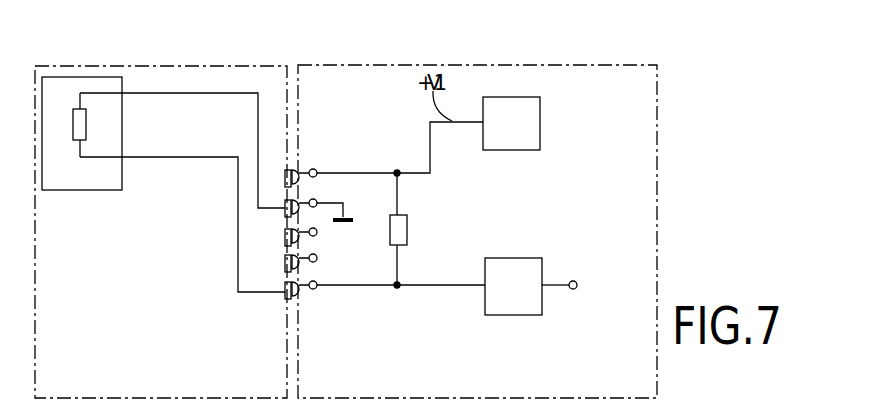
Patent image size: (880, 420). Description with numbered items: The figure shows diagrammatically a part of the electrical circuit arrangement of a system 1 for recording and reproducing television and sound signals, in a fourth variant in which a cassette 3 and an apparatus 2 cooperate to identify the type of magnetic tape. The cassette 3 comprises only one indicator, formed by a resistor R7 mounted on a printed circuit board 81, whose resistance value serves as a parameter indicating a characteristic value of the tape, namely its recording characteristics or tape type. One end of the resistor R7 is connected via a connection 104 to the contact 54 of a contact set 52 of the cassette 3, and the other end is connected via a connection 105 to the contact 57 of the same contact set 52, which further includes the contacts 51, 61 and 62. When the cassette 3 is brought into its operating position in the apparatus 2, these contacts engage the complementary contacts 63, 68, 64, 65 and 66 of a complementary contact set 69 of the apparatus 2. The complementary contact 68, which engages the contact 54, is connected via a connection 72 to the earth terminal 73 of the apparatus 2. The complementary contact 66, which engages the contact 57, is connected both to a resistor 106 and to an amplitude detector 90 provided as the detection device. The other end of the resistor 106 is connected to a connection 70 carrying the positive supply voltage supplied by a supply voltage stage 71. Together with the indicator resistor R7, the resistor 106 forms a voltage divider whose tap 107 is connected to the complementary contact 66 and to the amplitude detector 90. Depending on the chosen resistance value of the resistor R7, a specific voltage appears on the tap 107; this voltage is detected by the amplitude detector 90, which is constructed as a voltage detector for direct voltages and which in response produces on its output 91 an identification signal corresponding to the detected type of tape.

The system 1 is at (291, 55).
The apparatus 2 is at (577, 55).
The cassette 3 is at (154, 56).
The printed circuit board 81 is at (65, 188).
The resistor R7 is at (83, 122).
The connection 104 is at (177, 97).
The connection 105 is at (193, 160).
The contact 51 is at (284, 174).
The contact 54 is at (283, 212).
The contact 61 is at (283, 233).
The contact 62 is at (284, 266).
The contact 57 is at (283, 300).
The contact set 52 is at (277, 316).
The complementary contact set 69 is at (310, 317).
The complementary contact 63 is at (304, 170).
The complementary contact 68 is at (302, 211).
The complementary contact 64 is at (302, 237).
The complementary contact 65 is at (303, 262).
The complementary contact 66 is at (303, 294).
The connection 70 is at (378, 172).
The supply voltage stage 71 is at (532, 122).
The connection 72 is at (322, 197).
The earth terminal 73 is at (355, 222).
The resistor 106 is at (407, 233).
The tap 107 is at (400, 288).
The amplitude detector 90 is at (527, 268).
The output 91 is at (577, 280).